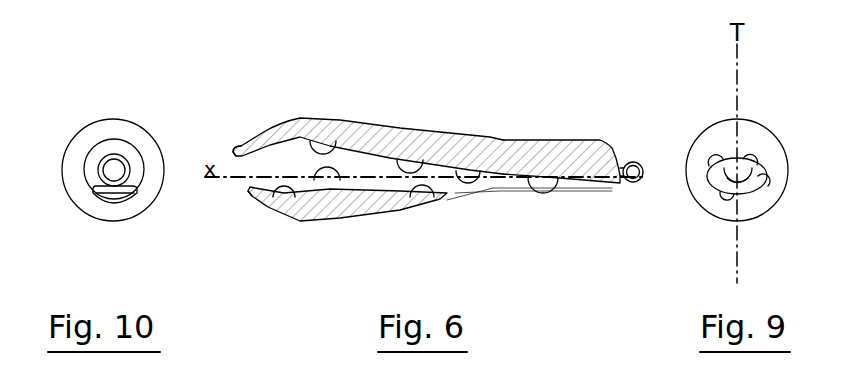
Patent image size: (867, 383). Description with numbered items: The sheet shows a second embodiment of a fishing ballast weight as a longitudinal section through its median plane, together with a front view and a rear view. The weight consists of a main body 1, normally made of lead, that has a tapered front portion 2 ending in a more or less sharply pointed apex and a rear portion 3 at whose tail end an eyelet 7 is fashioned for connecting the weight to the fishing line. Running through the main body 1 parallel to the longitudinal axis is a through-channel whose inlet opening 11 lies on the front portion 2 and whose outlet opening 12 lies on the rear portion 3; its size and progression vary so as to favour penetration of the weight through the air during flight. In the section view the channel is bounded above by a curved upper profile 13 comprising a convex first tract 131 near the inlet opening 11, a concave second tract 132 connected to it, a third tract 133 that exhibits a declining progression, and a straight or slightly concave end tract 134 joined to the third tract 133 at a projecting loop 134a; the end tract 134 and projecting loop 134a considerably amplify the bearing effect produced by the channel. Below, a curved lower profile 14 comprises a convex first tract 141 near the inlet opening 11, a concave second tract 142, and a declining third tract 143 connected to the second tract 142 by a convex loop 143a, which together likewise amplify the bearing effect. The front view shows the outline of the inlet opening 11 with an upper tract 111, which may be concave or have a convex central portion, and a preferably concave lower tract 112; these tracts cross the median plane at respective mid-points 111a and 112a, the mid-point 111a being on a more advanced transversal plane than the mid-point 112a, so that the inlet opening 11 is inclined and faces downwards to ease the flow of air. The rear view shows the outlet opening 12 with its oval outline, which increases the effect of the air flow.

In FIG. 6, the main body 1 is at (298, 118).
In FIG. 6, the front portion 2 is at (258, 136).
In FIG. 6, the rear portion 3 is at (570, 140).
In FIG. 6, the eyelet 7 is at (633, 162).
In FIG. 6, the inlet opening 11 is at (246, 180).
In FIG. 9, the inlet opening 11 is at (763, 186).
In FIG. 6, the outlet opening 12 is at (457, 190).
In FIG. 10, the outlet opening 12 is at (112, 193).
In FIG. 6, the upper profile 13 is at (380, 150).
In FIG. 6, the first tract 131 is at (232, 151).
In FIG. 6, the second tract 132 is at (308, 192).
In FIG. 6, the third tract 133 is at (426, 152).
In FIG. 6, the end tract 134 is at (538, 152).
In FIG. 6, the projecting loop 134a is at (483, 152).
In FIG. 6, the lower profile 14 is at (338, 186).
In FIG. 6, the first tract 141 is at (250, 192).
In FIG. 6, the second tract 142 is at (278, 198).
In FIG. 6, the third tract 143 is at (437, 197).
In FIG. 6, the convex loop 143a is at (352, 150).
In FIG. 9, the upper tract 111 is at (713, 158).
In FIG. 9, the mid-point 111a is at (760, 157).
In FIG. 9, the lower tract 112 is at (707, 182).
In FIG. 9, the mid-point 112a is at (722, 194).